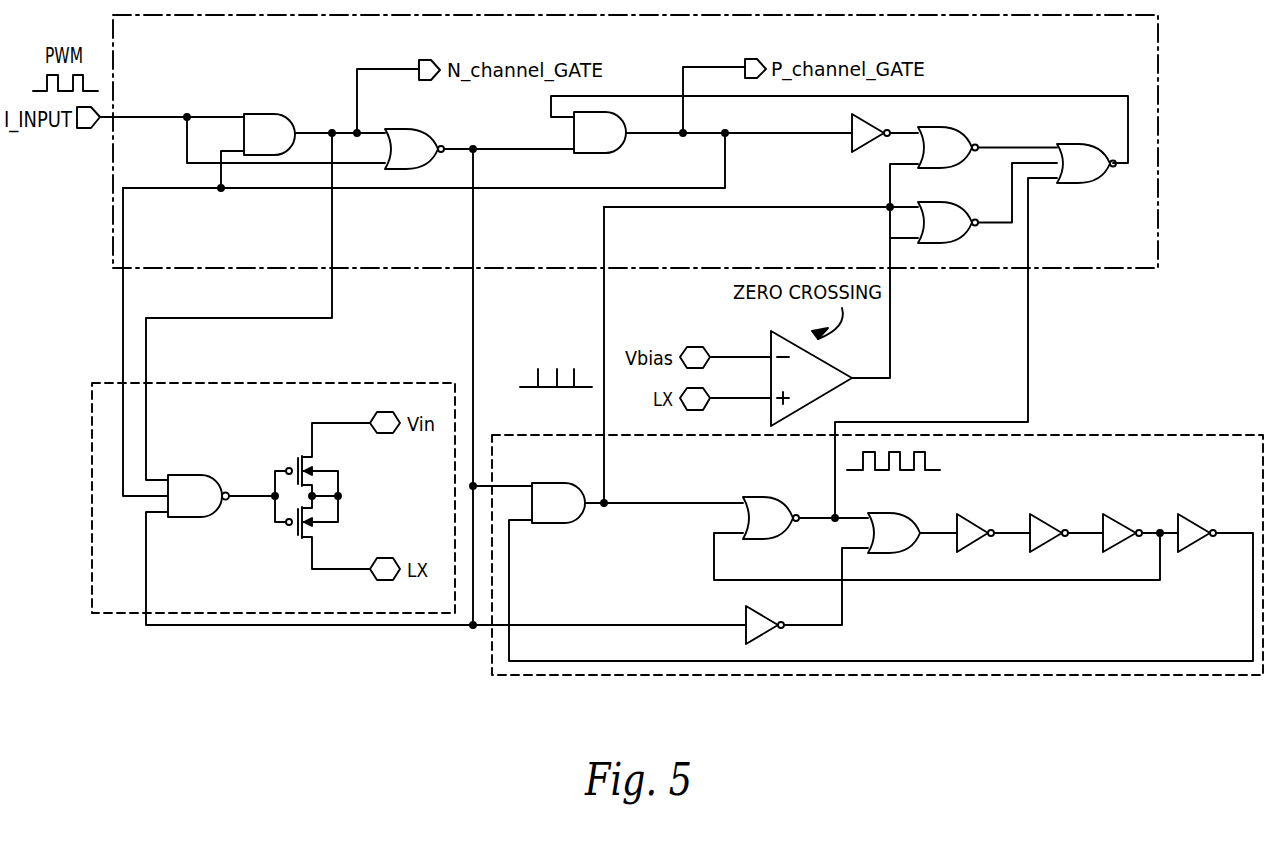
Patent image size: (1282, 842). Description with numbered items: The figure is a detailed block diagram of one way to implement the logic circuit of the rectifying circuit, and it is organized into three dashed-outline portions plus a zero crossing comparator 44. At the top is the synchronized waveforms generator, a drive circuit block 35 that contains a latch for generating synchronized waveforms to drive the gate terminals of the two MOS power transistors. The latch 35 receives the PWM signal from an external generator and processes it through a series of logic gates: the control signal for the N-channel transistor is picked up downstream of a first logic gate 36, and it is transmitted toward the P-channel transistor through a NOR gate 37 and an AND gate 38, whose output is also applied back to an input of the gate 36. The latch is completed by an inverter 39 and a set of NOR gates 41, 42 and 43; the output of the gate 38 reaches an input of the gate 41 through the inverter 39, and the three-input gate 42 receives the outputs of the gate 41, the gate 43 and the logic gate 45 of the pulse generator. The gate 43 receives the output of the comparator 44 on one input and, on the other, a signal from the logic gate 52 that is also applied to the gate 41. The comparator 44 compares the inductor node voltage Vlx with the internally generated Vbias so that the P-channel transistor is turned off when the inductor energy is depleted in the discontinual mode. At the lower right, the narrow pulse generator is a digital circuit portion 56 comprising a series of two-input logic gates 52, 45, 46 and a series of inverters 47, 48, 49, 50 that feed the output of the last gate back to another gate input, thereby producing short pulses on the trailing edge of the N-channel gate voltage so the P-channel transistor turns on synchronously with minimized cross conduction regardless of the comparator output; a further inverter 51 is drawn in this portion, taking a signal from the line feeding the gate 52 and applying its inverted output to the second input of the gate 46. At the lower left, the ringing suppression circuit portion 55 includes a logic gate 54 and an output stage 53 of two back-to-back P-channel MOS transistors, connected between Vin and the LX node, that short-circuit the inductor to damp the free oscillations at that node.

The drive circuit block 35 is at (1158, 45).
The first logic gate 36 is at (290, 119).
The NOR logic gate 37 is at (426, 130).
The AND logic gate 38 is at (622, 148).
The inverter 39 is at (852, 144).
The NOR logic gate 41 is at (960, 128).
The NOR logic gate 42 is at (1097, 178).
The NOR logic gate 43 is at (962, 242).
The zero crossing comparator 44 is at (771, 343).
The two-input logic gate 45 is at (785, 536).
The two-input logic gate 46 is at (908, 513).
The inverter 47 is at (957, 547).
The inverter 48 is at (1030, 547).
The inverter 49 is at (1103, 547).
The inverter 50 is at (1178, 520).
The inverter 51 is at (746, 612).
The two-input logic gate 52 is at (582, 519).
The output stage 53 is at (325, 487).
The logic gate 54 is at (222, 480).
The ringing suppression circuit portion 55 is at (92, 407).
The digital circuit portion 56 is at (492, 650).